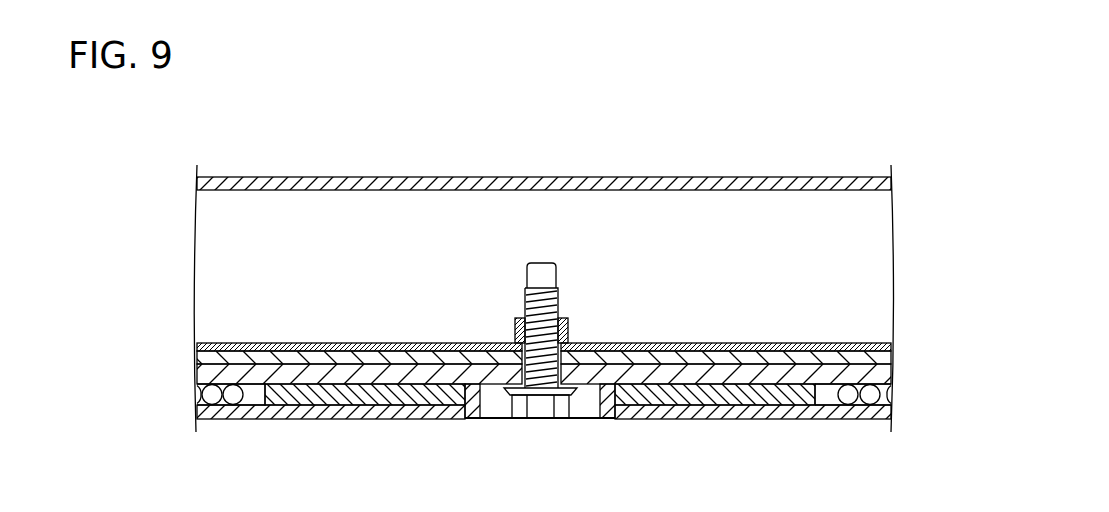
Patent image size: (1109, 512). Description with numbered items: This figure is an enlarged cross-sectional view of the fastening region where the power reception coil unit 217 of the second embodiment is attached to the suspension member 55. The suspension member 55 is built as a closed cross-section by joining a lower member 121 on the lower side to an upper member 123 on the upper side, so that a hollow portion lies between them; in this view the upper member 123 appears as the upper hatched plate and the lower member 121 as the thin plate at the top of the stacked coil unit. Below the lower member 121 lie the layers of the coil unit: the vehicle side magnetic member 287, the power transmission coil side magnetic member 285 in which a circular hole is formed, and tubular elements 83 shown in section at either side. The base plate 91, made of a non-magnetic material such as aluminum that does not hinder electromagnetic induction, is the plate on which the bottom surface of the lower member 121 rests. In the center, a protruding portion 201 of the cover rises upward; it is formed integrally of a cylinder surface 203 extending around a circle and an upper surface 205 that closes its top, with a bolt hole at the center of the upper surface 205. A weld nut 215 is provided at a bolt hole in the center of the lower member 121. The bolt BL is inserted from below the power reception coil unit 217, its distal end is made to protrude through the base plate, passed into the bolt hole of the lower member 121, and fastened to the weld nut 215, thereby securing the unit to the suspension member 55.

The suspension member 55 is at (345, 175).
The upper member 123 is at (718, 177).
The lower member 121 is at (729, 343).
The base plate 91 is at (377, 358).
The vehicle side magnetic member 287 is at (300, 372).
The power transmission coil side magnetic member 285 is at (763, 398).
The tubular members 83 is at (850, 398).
The power reception coil unit 217 is at (356, 423).
The upper surface 205 is at (493, 388).
The cylinder surface 203 is at (600, 402).
The protruding portion 201 is at (583, 400).
The bolt BL is at (530, 310).
The weld nut 215 is at (568, 330).